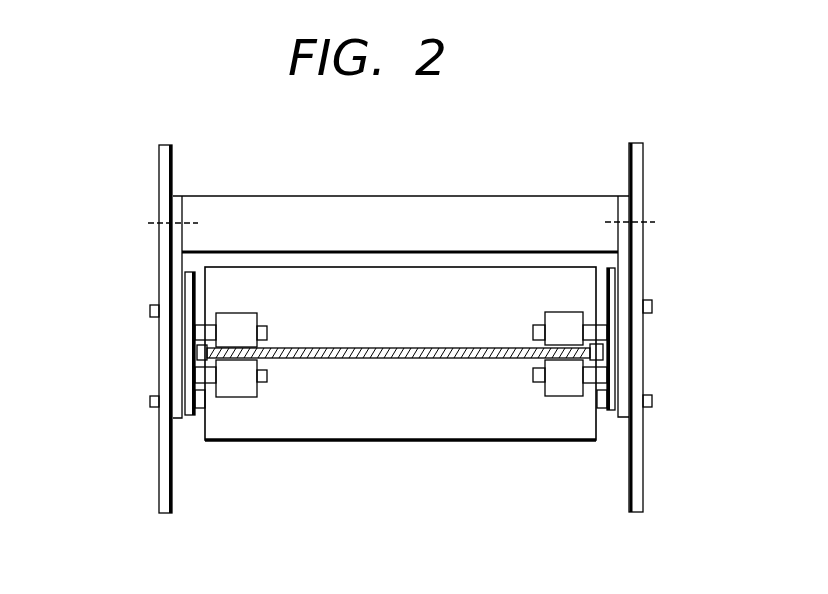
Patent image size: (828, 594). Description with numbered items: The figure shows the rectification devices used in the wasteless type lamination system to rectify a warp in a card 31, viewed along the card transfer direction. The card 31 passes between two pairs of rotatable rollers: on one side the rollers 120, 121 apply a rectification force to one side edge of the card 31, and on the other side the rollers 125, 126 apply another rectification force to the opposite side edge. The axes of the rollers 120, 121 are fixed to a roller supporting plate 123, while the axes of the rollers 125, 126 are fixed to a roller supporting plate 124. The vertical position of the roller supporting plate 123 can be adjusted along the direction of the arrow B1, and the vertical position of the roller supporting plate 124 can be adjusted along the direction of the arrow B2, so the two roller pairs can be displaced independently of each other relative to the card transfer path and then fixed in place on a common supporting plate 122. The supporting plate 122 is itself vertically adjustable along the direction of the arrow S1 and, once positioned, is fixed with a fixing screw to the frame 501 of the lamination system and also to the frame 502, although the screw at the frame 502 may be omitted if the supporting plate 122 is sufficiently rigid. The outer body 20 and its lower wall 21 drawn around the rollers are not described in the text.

The roller 20 is at (453, 295).
The roller body 21 is at (452, 423).
The card 31 is at (363, 362).
The rotatable roller 120 is at (557, 317).
The rotatable roller 121 is at (557, 387).
The supporting plate 122 is at (337, 197).
The roller supporting plate 123 is at (613, 270).
The roller supporting plate 124 is at (192, 272).
The rotatable roller 125 is at (233, 318).
The rotatable roller 126 is at (247, 388).
The frame 501 is at (643, 196).
The frame 502 is at (158, 194).
The direction arrow S1 is at (405, 197).
The direction arrow B1 is at (613, 414).
The direction arrow B2 is at (191, 419).